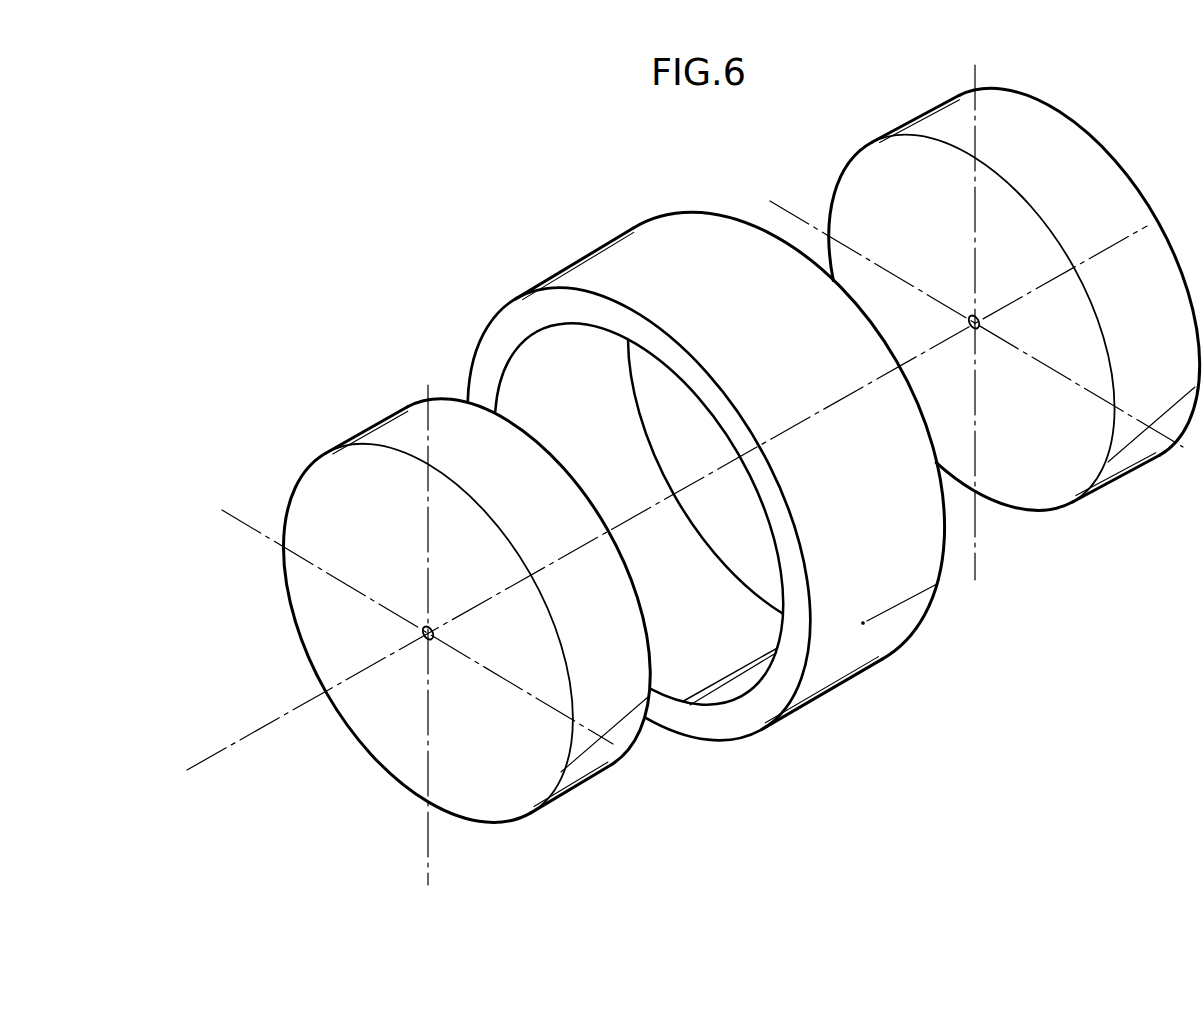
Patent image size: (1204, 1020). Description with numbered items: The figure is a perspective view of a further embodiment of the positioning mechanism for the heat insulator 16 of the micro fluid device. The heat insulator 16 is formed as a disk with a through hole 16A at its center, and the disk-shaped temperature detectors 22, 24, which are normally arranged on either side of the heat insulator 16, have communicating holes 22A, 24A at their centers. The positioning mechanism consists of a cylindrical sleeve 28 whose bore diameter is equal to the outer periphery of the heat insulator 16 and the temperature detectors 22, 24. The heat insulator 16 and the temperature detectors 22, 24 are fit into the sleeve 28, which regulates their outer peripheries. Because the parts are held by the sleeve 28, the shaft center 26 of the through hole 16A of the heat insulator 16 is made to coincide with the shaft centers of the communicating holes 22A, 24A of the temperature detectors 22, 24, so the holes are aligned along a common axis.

The heat insulator 16 is at (1099, 502).
The through hole 16A is at (977, 327).
The temperature detector 22 is at (436, 648).
The temperature detector 24 is at (552, 815).
The communicating hole 22A is at (320, 727).
The communicating hole 24A is at (424, 639).
The shaft center 26 is at (210, 755).
The cylindrical sleeve 28 is at (836, 672).